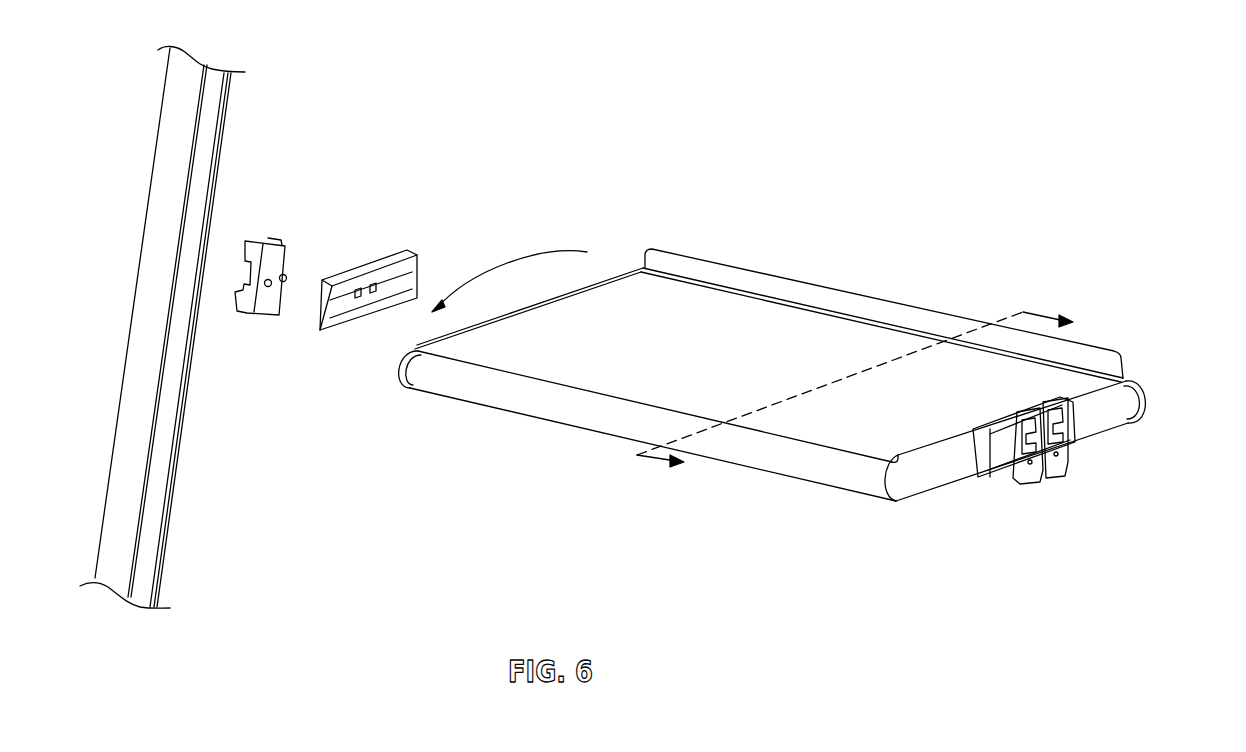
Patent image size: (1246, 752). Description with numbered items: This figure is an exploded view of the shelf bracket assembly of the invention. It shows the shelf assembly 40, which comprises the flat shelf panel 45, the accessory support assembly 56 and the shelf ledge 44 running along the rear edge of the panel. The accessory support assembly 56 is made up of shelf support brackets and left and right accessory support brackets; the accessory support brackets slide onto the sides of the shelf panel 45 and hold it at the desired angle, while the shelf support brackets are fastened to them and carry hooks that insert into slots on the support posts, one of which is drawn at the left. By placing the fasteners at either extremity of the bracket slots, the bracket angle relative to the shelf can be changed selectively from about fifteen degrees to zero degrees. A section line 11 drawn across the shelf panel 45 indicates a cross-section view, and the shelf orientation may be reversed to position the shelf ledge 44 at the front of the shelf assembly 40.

The section line 11 is at (873, 396).
The shelf assembly 40 is at (618, 476).
The shelf ledge 44 is at (852, 290).
The shelf panel 45 is at (810, 387).
The accessory support assembly 56 is at (1122, 430).